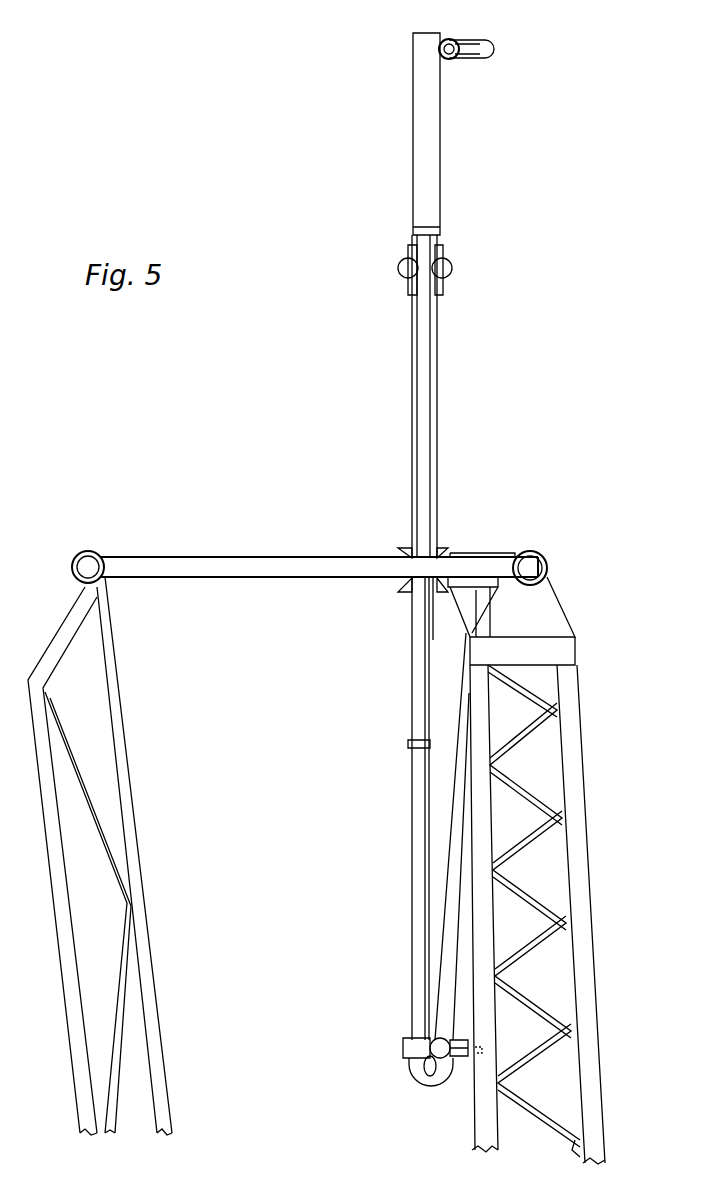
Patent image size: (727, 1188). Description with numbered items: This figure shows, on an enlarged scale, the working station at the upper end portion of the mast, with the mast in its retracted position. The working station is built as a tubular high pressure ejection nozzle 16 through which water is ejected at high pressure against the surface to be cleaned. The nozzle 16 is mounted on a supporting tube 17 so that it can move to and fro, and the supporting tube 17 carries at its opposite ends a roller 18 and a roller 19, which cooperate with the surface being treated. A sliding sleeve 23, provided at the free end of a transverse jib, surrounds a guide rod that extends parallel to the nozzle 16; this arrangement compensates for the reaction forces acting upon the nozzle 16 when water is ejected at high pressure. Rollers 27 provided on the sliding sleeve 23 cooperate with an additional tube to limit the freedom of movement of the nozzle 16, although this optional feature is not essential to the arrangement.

The tubular high pressure ejection nozzle 16 is at (410, 345).
The supporting tube 17 is at (410, 900).
The roller 18 is at (487, 58).
The roller 19 is at (468, 1062).
The sliding sleeve 23 is at (412, 285).
The rollers 27 is at (404, 262).